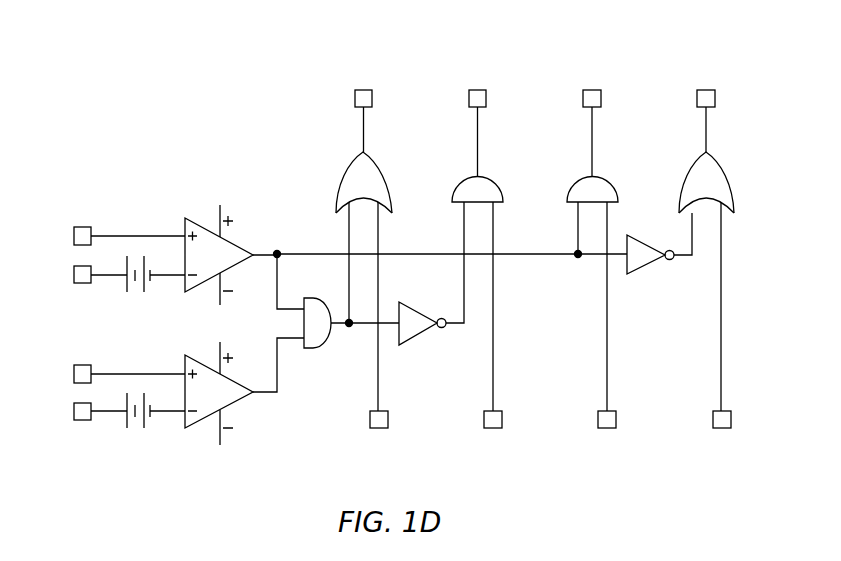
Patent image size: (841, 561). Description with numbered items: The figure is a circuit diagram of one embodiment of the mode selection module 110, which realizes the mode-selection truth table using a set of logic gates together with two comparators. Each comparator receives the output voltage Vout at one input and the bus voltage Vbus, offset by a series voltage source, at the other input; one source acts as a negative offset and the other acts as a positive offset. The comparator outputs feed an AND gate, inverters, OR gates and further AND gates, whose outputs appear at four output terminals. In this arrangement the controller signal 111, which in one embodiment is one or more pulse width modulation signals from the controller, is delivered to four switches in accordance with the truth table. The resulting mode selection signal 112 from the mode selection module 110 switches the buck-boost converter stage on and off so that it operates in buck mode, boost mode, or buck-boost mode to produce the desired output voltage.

The mode selection module 110 is at (120, 67).
The controller signal 111 is at (742, 458).
The mode selection signal 112 is at (737, 65).